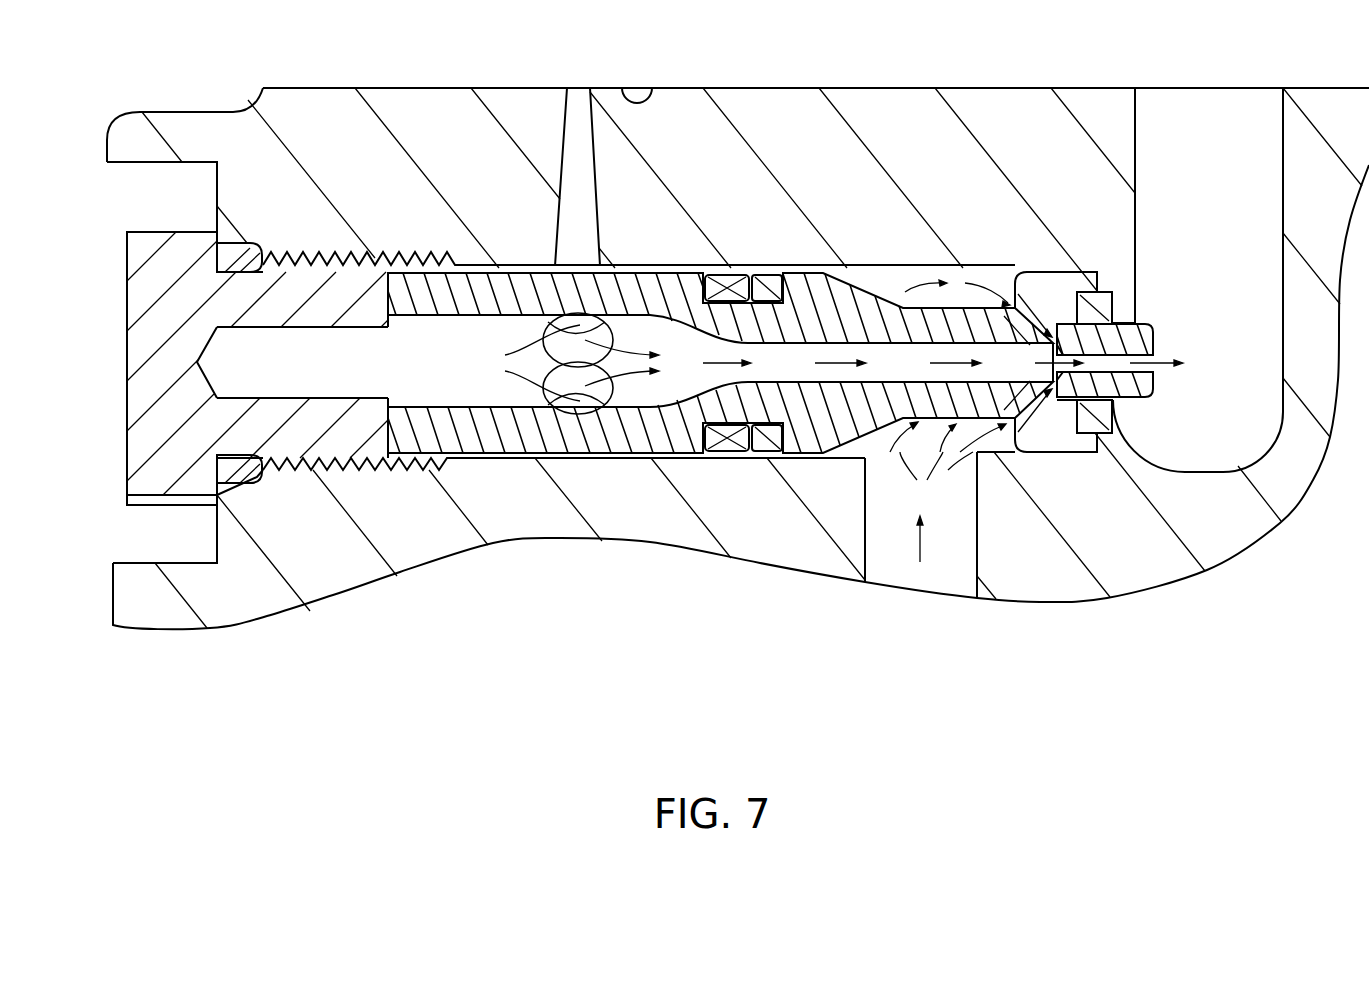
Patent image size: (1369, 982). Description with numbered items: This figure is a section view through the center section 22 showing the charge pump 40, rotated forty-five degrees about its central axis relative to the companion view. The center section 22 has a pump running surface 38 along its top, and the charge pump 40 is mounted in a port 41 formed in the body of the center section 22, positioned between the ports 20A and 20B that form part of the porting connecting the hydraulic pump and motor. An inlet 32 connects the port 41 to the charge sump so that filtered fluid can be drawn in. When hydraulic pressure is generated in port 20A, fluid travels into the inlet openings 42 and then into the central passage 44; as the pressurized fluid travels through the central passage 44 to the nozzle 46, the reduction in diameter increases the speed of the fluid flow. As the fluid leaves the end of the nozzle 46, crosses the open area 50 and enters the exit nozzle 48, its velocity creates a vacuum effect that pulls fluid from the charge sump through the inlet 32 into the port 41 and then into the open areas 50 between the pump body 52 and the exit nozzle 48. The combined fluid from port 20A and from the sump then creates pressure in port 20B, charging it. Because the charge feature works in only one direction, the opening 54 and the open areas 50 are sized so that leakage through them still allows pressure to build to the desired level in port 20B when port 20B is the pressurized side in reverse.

The center section 22 is at (438, 112).
The port 20A is at (578, 133).
The port 20B is at (1208, 133).
The pump running surface 38 is at (1025, 88).
The port 41 is at (887, 283).
The charge pump 40 is at (108, 299).
The inlet openings 42 is at (505, 355).
The central passage 44 is at (797, 365).
The exit nozzle 48 is at (1072, 270).
The open area 50 is at (1065, 373).
The opening 54 is at (1113, 365).
The pump body 52 is at (875, 427).
The inlet 32 is at (945, 565).
The nozzle 46 is at (1023, 367).